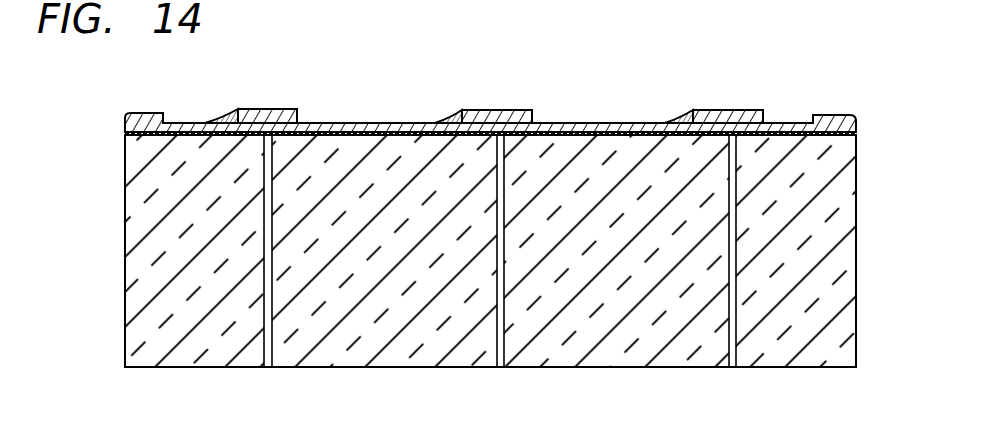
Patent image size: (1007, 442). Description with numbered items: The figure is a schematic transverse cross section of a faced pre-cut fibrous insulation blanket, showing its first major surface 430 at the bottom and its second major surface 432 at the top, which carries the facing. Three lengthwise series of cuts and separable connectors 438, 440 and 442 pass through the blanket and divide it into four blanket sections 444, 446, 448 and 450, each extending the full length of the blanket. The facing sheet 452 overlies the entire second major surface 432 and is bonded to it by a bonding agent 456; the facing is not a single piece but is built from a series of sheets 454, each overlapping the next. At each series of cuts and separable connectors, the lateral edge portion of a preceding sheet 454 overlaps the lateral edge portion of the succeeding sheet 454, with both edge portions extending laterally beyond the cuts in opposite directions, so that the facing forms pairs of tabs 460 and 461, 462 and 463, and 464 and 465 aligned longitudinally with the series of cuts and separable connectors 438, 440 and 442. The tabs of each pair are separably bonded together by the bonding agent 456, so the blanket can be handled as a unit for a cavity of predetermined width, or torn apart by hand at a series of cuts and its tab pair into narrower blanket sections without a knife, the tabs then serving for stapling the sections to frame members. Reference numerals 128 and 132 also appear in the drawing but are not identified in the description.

The semiconductor package 128 is at (797, 63).
The conductive bump 132 is at (550, 61).
The first major surface 430 is at (322, 132).
The second major surface 432 is at (673, 368).
The series of cuts and separable connectors 438 is at (743, 287).
The series of cuts and separable connectors 440 is at (512, 313).
The series of cuts and separable connectors 442 is at (273, 300).
The blanket section 444 is at (820, 193).
The blanket section 446 is at (632, 230).
The blanket section 448 is at (362, 248).
The blanket section 450 is at (218, 286).
The facing sheet 452 is at (590, 122).
The sheet 454 is at (171, 122).
The bonding agent 456 is at (562, 133).
The tab 460 is at (720, 110).
The tab 461 is at (756, 110).
The tab 462 is at (475, 110).
The tab 463 is at (518, 112).
The tab 464 is at (260, 109).
The tab 465 is at (296, 117).